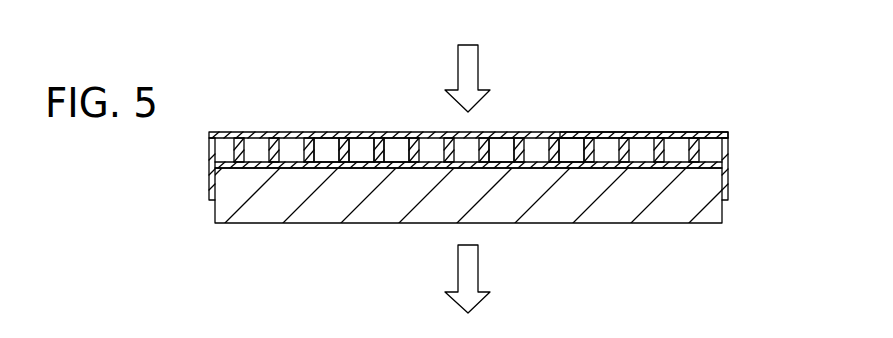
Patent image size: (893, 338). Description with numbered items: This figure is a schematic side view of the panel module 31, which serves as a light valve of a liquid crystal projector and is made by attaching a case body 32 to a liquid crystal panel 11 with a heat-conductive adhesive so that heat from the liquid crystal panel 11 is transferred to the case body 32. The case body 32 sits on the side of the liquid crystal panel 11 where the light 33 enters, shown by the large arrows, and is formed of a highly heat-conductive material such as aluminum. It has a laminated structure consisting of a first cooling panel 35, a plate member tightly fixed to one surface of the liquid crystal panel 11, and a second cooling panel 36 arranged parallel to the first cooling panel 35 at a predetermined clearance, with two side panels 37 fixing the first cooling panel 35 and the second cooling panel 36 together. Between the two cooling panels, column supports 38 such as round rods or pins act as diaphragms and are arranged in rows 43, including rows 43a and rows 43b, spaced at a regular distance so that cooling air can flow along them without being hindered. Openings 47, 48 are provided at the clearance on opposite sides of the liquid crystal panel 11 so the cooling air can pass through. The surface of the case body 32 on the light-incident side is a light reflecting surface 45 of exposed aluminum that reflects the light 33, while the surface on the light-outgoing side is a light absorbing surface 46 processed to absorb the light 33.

The liquid crystal panel 11 is at (712, 211).
The panel module 31 is at (714, 111).
The case body 32 is at (590, 130).
The light 33 is at (480, 65).
The first cooling panel 35 is at (645, 168).
The second cooling panel 36 is at (647, 132).
The side panels 37 is at (209, 185).
The column supports 38 is at (275, 132).
The rows 43 is at (316, 262).
The rows of the column supports 43a is at (239, 140).
The rows of the column supports 43b is at (277, 140).
The light reflecting surface 45 is at (330, 155).
The light absorbing surface 46 is at (402, 148).
The opening 47 is at (577, 155).
The opening 48 is at (571, 150).